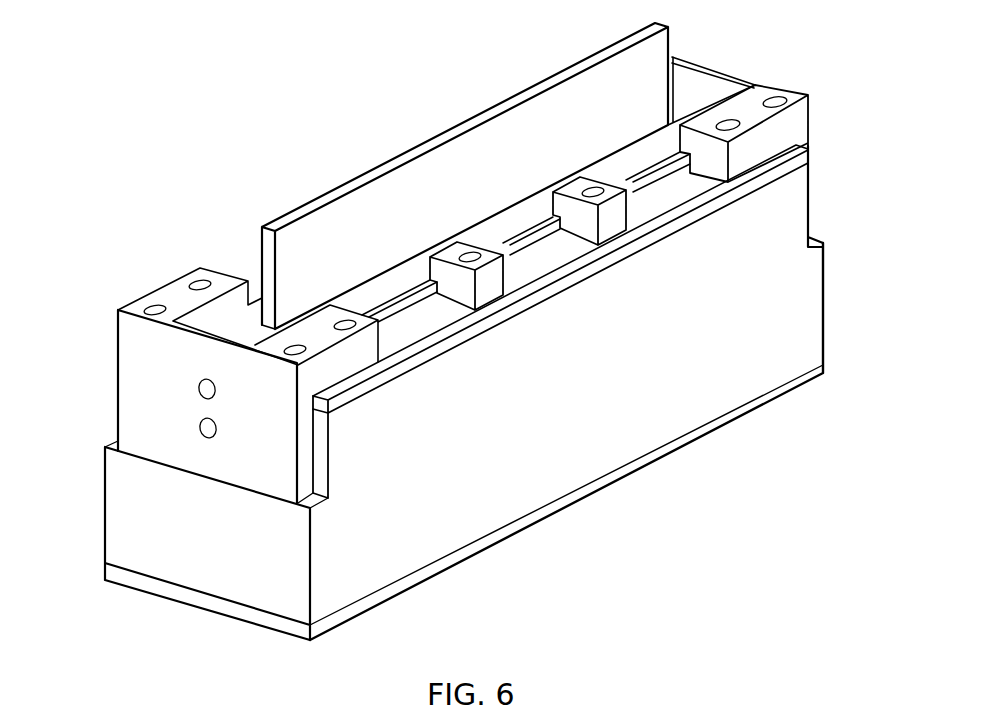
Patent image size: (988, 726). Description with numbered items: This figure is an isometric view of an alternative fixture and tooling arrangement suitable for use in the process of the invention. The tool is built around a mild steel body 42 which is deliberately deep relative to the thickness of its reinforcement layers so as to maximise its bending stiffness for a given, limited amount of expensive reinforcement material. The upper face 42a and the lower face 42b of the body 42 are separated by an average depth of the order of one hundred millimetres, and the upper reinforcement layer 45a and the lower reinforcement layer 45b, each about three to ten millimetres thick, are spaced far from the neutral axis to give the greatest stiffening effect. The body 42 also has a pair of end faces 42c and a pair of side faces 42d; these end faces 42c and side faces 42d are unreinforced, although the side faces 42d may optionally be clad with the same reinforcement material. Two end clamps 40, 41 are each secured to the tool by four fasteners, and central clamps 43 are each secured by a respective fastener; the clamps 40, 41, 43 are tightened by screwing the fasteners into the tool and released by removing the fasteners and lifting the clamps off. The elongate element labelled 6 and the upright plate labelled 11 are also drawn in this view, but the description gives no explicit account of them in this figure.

The rail 6 is at (405, 318).
The plate 11 is at (418, 146).
The end clamp 40 is at (192, 453).
The end clamp 41 is at (752, 84).
The body of the tool 42 is at (466, 348).
The upper face 42a is at (670, 233).
The lower face 42b is at (688, 433).
The end face 42c is at (122, 490).
The side face 42d is at (802, 278).
The central clamp 43 is at (497, 278).
The upper reinforcement layer 45a is at (710, 212).
The lower reinforcement layer 45b is at (823, 367).